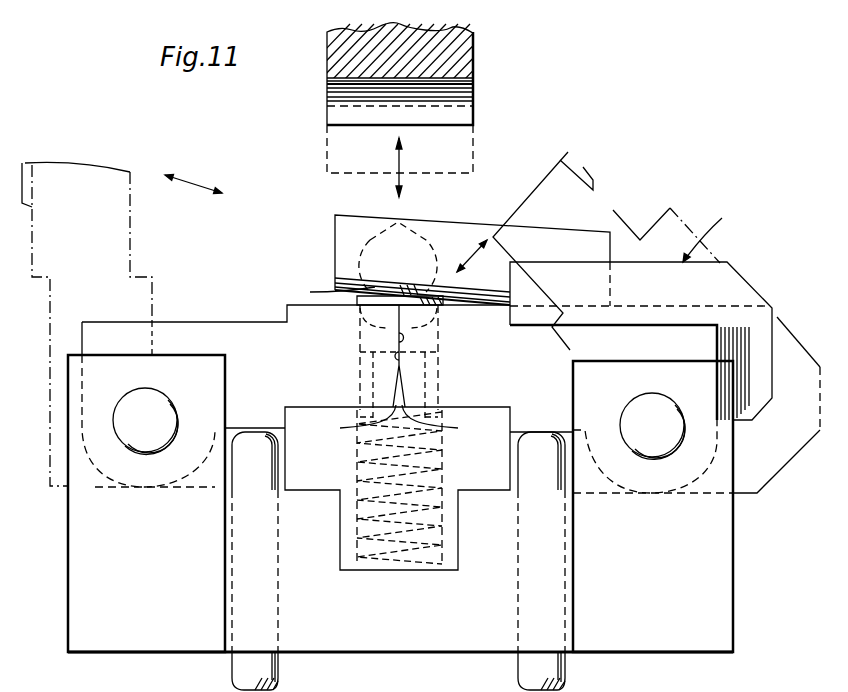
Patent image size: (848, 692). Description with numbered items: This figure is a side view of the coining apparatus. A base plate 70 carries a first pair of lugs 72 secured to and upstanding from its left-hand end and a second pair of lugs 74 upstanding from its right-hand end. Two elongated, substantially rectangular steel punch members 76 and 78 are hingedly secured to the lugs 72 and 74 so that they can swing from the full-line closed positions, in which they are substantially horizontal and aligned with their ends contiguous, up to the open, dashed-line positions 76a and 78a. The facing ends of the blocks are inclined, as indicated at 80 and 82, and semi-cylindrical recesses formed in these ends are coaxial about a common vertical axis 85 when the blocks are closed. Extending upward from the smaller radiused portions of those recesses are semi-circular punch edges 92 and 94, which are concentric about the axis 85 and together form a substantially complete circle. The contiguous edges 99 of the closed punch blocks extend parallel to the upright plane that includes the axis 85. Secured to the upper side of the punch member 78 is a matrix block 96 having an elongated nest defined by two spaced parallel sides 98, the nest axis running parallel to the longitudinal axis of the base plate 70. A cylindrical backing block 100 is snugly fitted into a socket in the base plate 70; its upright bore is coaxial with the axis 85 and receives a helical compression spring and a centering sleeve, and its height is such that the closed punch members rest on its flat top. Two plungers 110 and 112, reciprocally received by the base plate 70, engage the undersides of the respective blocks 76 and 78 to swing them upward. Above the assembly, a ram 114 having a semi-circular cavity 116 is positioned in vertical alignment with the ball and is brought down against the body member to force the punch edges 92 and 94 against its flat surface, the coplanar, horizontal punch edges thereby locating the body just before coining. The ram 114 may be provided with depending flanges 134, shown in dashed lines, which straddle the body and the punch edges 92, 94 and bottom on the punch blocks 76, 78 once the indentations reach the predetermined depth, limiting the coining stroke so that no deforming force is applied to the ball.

The base plate 70 is at (462, 637).
The first pair of lugs 72 is at (87, 598).
The second pair of lugs 74 is at (723, 605).
The punch member 76 is at (218, 320).
The open dashed-line position of punch member 76 76a is at (130, 192).
The punch member 78 is at (543, 396).
The open dashed-line position of punch member 78 78a is at (615, 207).
The inclined facing end 80 is at (363, 423).
The inclined facing end 82 is at (445, 427).
The common vertical axis 85 is at (400, 207).
The punch edge 92 is at (18, 175).
The punch edge 94 is at (588, 160).
The matrix block 96 is at (713, 234).
The spaced parallel sides 98 is at (705, 278).
The contiguous edges 99 is at (396, 340).
The backing block 100 is at (326, 478).
The plunger 110 is at (243, 670).
The plunger 112 is at (565, 672).
The ram 114 is at (473, 62).
The semi-circular cavity 116 is at (463, 105).
The depending flanges 134 is at (473, 160).